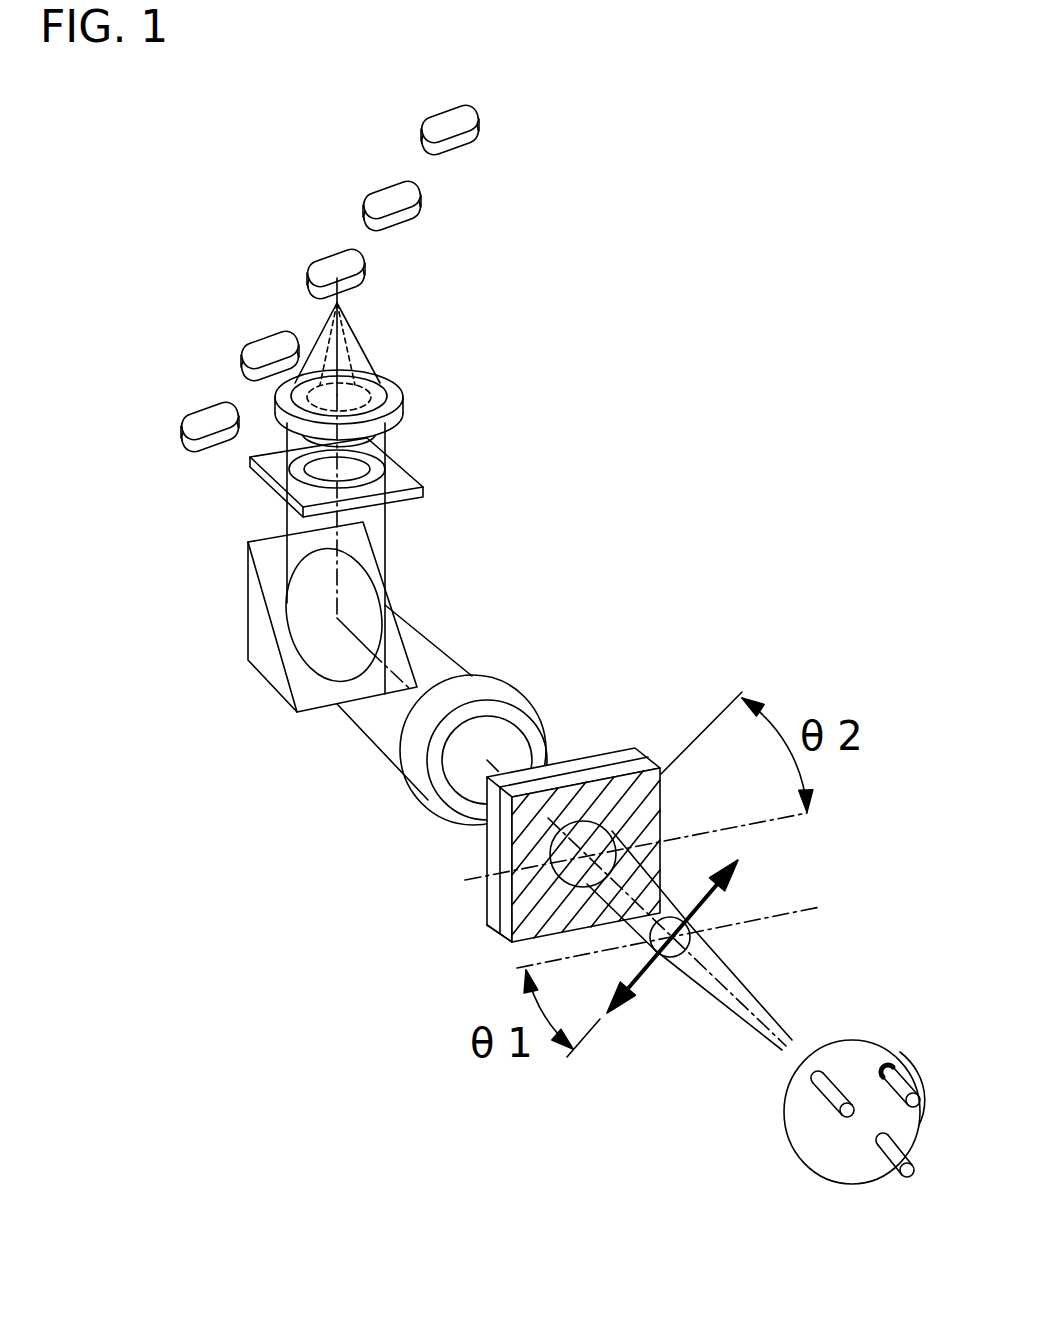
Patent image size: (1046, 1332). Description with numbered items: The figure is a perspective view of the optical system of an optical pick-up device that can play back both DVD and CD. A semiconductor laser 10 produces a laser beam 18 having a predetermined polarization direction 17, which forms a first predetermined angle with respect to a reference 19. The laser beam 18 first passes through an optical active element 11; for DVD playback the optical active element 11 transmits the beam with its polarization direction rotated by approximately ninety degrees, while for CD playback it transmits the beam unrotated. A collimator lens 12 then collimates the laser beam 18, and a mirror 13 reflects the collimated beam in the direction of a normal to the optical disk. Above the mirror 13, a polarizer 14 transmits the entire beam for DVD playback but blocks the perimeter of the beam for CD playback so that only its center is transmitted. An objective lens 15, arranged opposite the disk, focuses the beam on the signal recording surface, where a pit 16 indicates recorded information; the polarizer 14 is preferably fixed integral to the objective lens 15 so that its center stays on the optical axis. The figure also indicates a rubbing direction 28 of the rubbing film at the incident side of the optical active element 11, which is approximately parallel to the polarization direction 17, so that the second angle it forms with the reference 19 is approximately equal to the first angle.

The semiconductor laser 10 is at (868, 1038).
The optical active element 11 is at (620, 750).
The collimator lens 12 is at (485, 688).
The mirror 13 is at (260, 657).
The polarizer 14 is at (400, 483).
The objective lens 15 is at (392, 393).
The pit 16 is at (390, 193).
The polarization direction 17 is at (647, 972).
The laser beam 18 is at (730, 965).
The reference 19 is at (780, 818).
The rubbing direction 28 is at (523, 943).